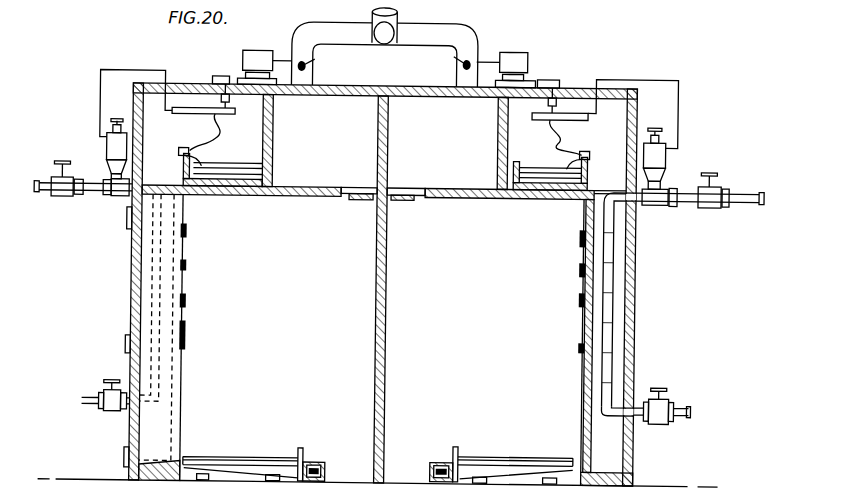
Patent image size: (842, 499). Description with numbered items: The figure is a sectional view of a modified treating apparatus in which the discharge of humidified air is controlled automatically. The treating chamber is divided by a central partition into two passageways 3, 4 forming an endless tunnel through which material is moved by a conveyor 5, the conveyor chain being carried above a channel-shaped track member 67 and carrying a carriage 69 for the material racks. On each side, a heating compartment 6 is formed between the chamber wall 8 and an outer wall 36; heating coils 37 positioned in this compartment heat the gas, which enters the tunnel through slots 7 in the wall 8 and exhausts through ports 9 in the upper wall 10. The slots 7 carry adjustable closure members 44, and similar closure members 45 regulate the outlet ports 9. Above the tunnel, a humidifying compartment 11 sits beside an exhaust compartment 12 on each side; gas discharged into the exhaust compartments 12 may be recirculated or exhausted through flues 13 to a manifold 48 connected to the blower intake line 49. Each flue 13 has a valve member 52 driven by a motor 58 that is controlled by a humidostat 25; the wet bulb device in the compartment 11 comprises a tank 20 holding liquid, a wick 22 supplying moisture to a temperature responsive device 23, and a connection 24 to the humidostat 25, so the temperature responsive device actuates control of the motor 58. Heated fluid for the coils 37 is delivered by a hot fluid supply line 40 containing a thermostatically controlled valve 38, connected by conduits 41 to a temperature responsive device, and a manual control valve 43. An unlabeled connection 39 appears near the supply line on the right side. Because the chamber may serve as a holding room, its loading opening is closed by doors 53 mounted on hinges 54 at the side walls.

The passageway 3 is at (226, 338).
The passageway 4 is at (488, 316).
The conveyor 5 is at (306, 458).
The compartment 6 is at (636, 328).
The slot 7 is at (582, 348).
The wall 8 is at (582, 406).
The port 9 is at (352, 188).
The upper wall 10 is at (453, 187).
The humidifying compartment 11 is at (150, 112).
The exhaust compartment 12 is at (364, 130).
The flue 13 is at (472, 54).
The tank 20 is at (588, 178).
The wick 22 is at (262, 160).
The temperature responsive device 23 is at (190, 152).
The connection 24 is at (209, 127).
The humidostat 25 is at (215, 78).
The outer wall 36 is at (636, 352).
The heating coil 37 is at (614, 296).
The thermostatically controlled valve 38 is at (105, 156).
The connection 39 is at (655, 208).
The hot fluid supply line 40 is at (37, 197).
The conduit 41 is at (97, 104).
The control valve 43 is at (60, 167).
The closure member 44 is at (186, 308).
The closure member 45 is at (360, 201).
The manifold 48 is at (410, 42).
The intake line 49 is at (397, 18).
The valve member 52 is at (314, 63).
The door 53 is at (134, 282).
The hinge 54 is at (126, 224).
The motor 58 is at (242, 58).
The track member 67 is at (328, 472).
The carriage 69 is at (243, 460).